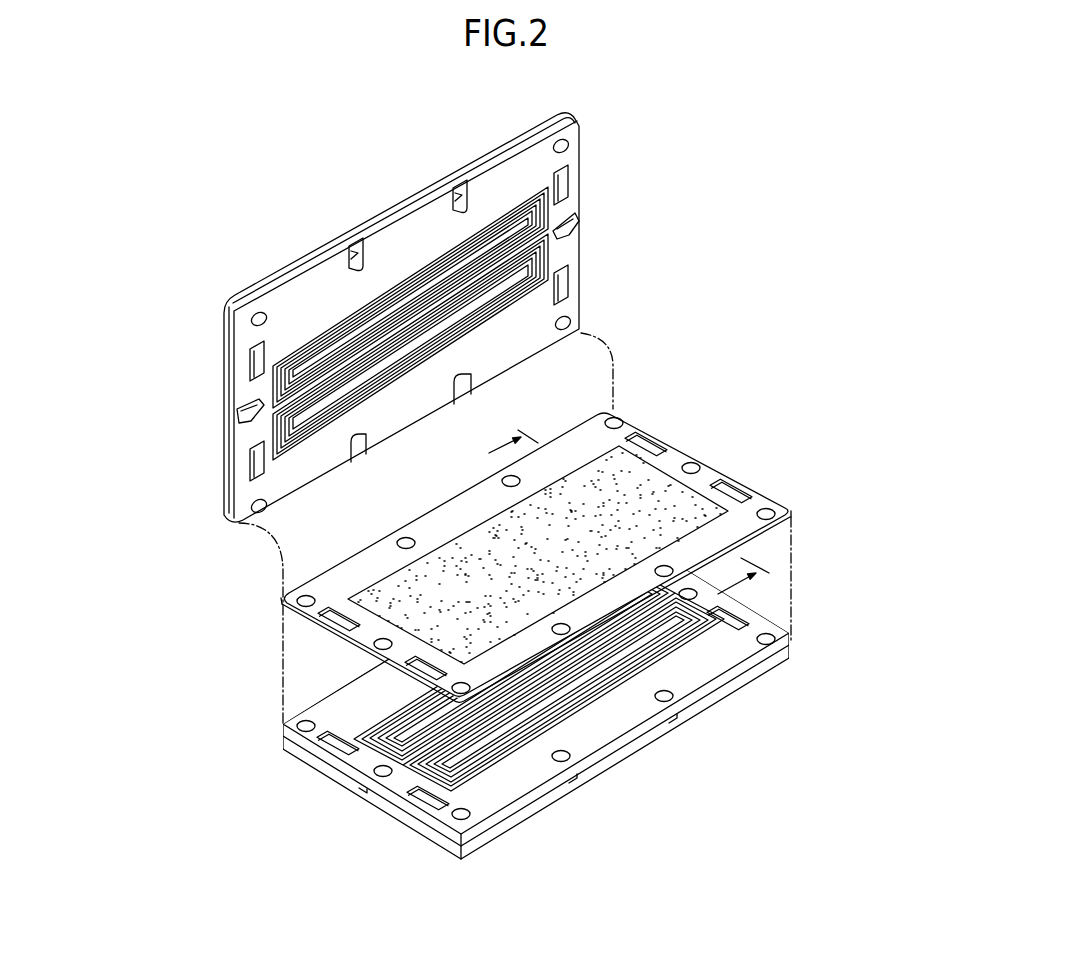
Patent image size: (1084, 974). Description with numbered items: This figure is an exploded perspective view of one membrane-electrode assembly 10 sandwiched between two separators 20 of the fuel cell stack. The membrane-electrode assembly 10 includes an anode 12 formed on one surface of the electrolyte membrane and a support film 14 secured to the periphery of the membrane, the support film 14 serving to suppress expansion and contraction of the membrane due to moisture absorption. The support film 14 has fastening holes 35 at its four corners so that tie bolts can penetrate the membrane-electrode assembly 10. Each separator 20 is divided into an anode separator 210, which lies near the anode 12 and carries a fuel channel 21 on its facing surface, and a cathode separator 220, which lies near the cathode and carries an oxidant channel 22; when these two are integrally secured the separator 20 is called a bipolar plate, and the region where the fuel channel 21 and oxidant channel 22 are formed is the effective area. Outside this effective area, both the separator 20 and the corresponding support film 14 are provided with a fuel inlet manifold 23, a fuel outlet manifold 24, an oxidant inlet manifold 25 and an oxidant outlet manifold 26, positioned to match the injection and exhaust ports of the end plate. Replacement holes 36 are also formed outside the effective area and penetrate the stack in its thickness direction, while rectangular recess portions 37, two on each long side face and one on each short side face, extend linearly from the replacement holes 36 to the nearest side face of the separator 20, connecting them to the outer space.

The membrane-electrode assembly 10 is at (806, 512).
The anode 12 is at (392, 585).
The support film 14 is at (450, 508).
The separator 20 is at (165, 378).
The fuel channel 21 is at (425, 253).
The oxidant channel 22 is at (582, 706).
The fuel inlet manifold 23 is at (569, 283).
The fuel outlet manifold 24 is at (247, 357).
The oxidant inlet manifold 25 is at (247, 462).
The oxidant outlet manifold 26 is at (570, 183).
The fastening holes 35 is at (568, 142).
The replacement holes 36 is at (457, 184).
The recess portions 37 is at (353, 246).
The anode separator 210 is at (231, 382).
The cathode separator 220 is at (231, 418).